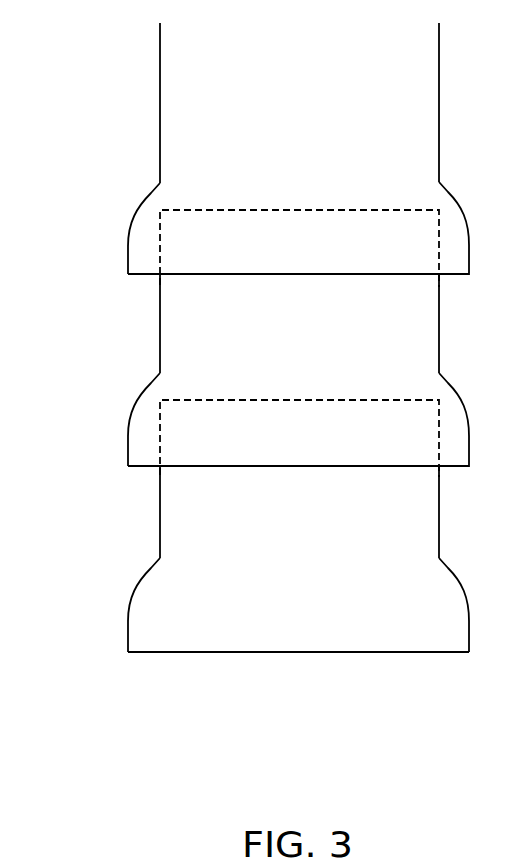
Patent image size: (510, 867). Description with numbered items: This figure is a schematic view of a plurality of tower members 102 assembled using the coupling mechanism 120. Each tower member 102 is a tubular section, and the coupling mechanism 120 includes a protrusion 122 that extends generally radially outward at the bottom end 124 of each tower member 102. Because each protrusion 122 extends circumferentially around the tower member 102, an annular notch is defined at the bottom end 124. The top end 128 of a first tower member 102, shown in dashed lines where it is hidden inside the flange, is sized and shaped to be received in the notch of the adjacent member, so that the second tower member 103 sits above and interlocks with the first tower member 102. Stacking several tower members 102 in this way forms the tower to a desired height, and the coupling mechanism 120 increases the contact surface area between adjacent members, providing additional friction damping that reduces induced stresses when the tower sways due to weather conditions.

The tower member 102 is at (160, 72).
The second tower member 103 is at (185, 348).
The coupling mechanism 120 is at (115, 222).
The protrusion 122 is at (128, 250).
The bottom end 124 is at (100, 472).
The top end 128 is at (279, 196).